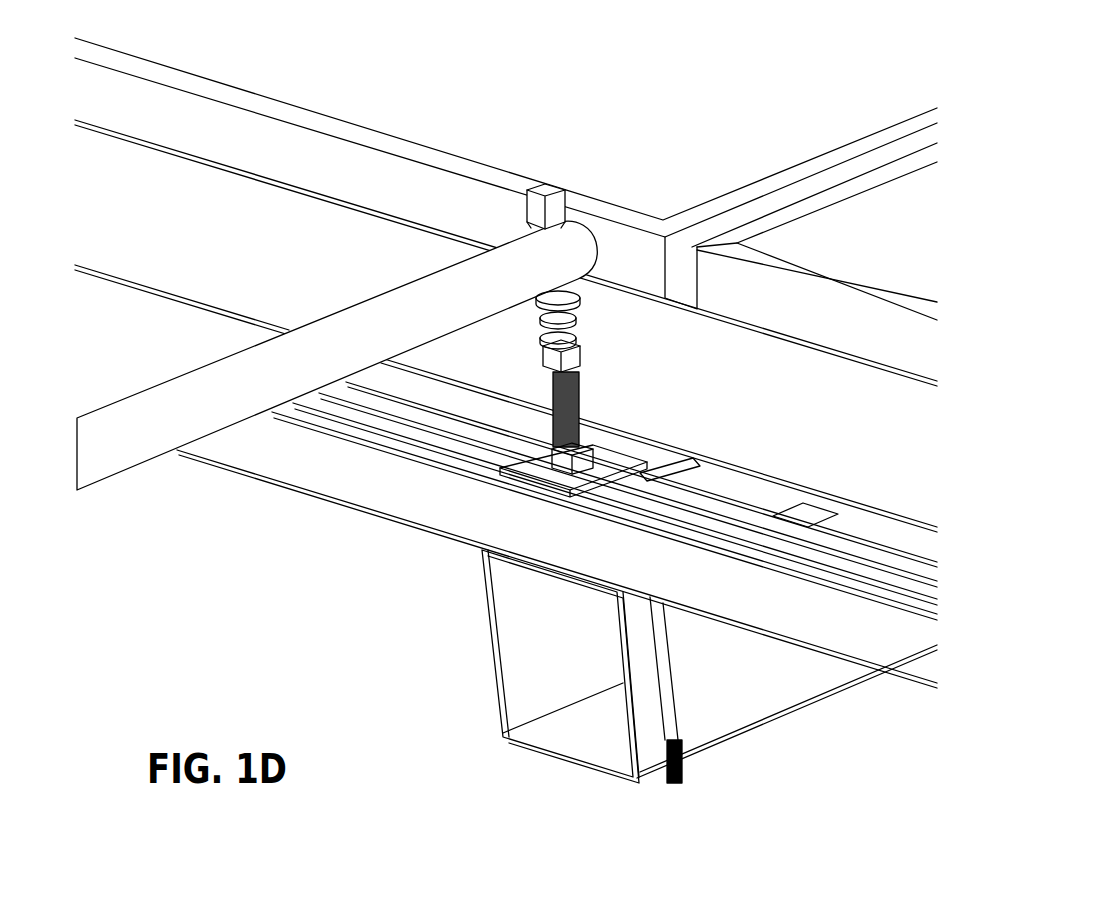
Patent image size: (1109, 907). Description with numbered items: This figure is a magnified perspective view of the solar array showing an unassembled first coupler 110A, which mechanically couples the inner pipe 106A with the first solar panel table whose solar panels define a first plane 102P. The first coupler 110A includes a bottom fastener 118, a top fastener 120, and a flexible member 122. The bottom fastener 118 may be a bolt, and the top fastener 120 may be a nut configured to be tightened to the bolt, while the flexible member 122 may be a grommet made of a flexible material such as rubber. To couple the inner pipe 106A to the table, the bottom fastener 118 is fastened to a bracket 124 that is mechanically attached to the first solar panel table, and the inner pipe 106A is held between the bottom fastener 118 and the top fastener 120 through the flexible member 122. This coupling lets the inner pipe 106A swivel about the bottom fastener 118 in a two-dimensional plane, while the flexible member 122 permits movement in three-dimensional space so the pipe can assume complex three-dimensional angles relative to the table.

The first plane 102P is at (762, 384).
The inner pipe 106A is at (430, 286).
The first coupler 110A is at (600, 352).
The bottom fastener 118 is at (580, 397).
The top fastener 120 is at (558, 209).
The flexible member 122 is at (537, 312).
The bracket 124 is at (388, 494).